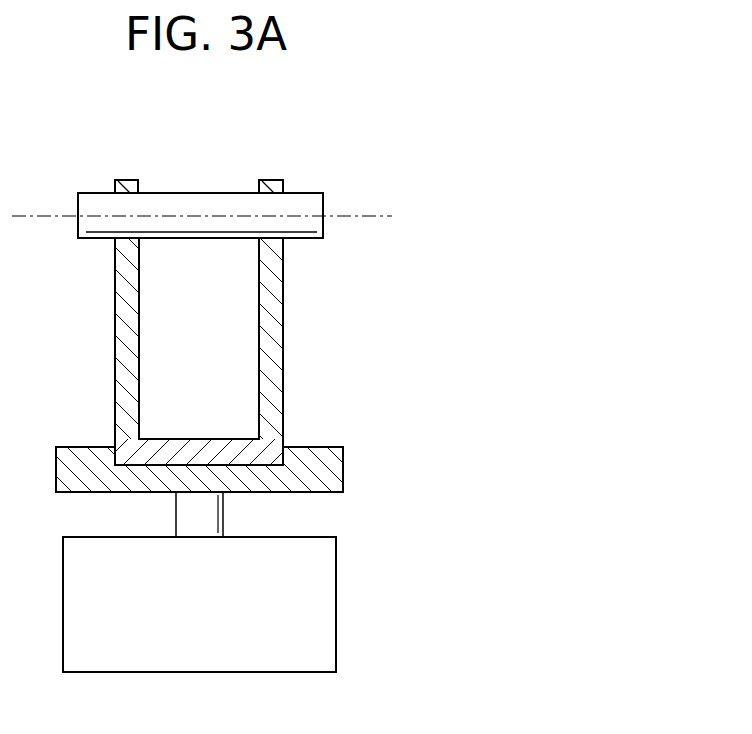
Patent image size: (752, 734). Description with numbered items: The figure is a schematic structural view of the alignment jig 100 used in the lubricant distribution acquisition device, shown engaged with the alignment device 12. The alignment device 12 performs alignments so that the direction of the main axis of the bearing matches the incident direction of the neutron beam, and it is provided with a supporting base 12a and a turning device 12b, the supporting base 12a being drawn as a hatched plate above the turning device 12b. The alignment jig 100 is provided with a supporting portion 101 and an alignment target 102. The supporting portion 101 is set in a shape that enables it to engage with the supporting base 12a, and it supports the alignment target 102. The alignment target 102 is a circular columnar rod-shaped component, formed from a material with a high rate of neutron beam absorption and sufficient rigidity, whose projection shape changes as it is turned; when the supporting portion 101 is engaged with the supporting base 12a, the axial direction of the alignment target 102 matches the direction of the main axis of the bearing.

The alignment jig 100 is at (220, 281).
The supporting portion 101 is at (274, 336).
The alignment target 102 is at (310, 200).
The alignment device 12 is at (274, 559).
The supporting base 12a is at (338, 466).
The turning device 12b is at (350, 570).